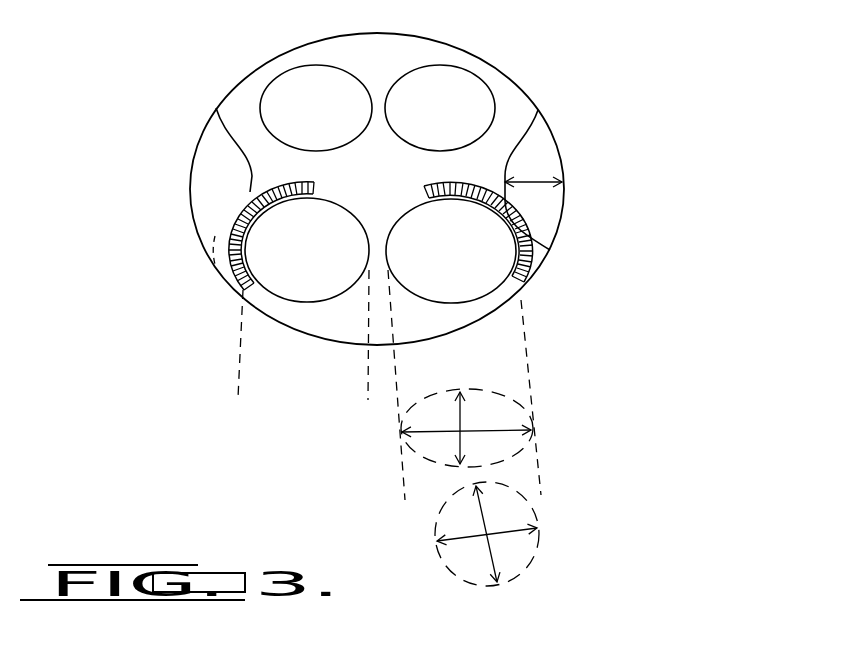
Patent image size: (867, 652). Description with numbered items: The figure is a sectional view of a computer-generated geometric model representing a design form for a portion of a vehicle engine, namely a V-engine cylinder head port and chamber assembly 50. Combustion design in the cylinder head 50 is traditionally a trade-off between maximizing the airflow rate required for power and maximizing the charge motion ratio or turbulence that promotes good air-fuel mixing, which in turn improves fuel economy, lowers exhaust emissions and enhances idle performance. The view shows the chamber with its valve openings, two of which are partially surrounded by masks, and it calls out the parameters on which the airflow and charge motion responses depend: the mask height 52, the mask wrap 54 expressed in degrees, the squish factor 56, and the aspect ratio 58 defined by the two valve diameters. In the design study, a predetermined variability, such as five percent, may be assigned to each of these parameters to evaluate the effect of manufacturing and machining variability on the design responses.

The cylinder head 50 is at (573, 98).
The mask height 52 is at (545, 268).
The mask wrap 54 is at (310, 199).
The squish factor 56 is at (638, 197).
The aspect ratio 58 is at (480, 428).